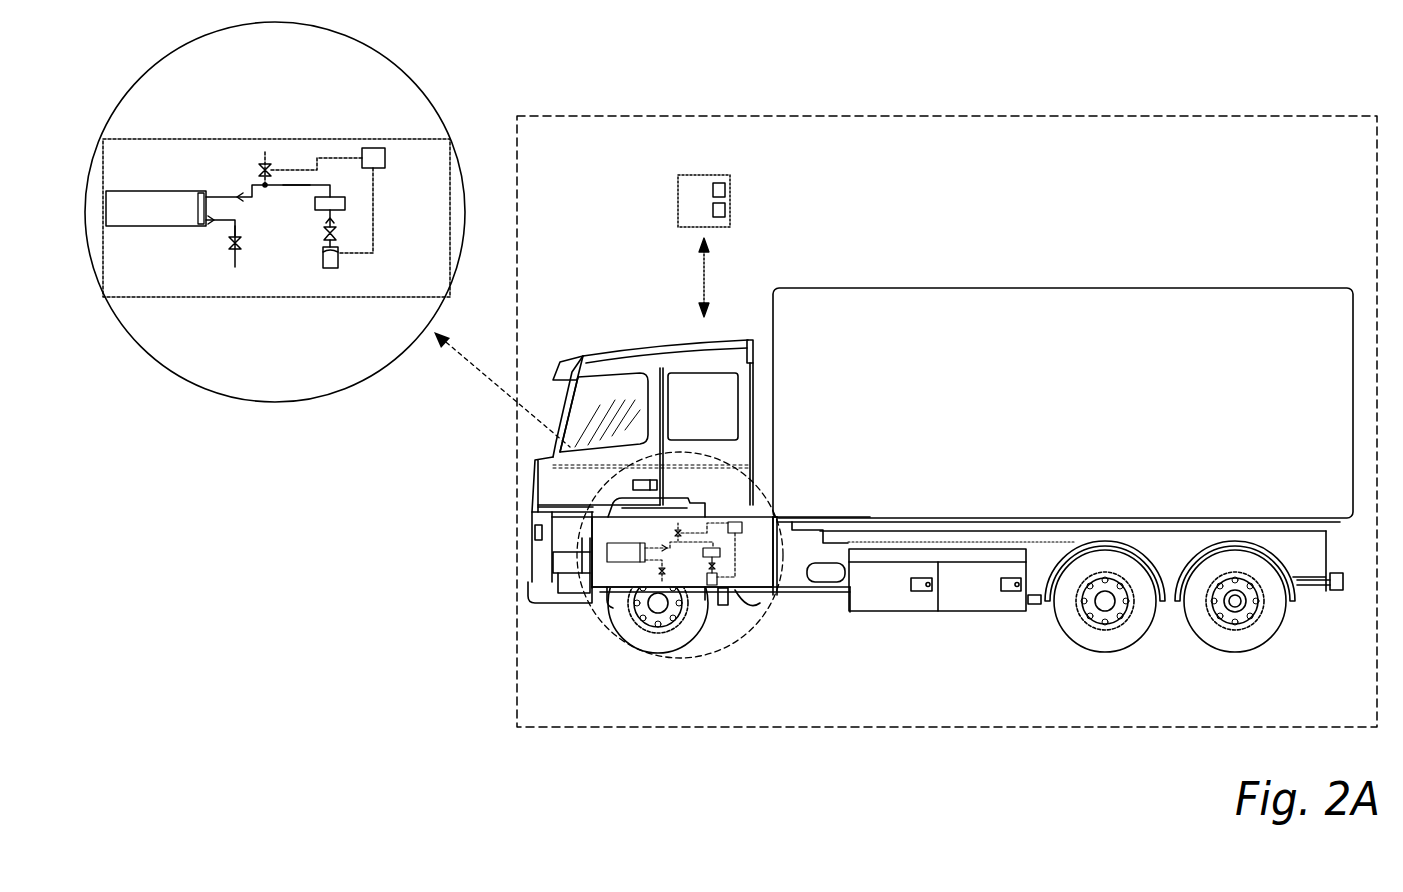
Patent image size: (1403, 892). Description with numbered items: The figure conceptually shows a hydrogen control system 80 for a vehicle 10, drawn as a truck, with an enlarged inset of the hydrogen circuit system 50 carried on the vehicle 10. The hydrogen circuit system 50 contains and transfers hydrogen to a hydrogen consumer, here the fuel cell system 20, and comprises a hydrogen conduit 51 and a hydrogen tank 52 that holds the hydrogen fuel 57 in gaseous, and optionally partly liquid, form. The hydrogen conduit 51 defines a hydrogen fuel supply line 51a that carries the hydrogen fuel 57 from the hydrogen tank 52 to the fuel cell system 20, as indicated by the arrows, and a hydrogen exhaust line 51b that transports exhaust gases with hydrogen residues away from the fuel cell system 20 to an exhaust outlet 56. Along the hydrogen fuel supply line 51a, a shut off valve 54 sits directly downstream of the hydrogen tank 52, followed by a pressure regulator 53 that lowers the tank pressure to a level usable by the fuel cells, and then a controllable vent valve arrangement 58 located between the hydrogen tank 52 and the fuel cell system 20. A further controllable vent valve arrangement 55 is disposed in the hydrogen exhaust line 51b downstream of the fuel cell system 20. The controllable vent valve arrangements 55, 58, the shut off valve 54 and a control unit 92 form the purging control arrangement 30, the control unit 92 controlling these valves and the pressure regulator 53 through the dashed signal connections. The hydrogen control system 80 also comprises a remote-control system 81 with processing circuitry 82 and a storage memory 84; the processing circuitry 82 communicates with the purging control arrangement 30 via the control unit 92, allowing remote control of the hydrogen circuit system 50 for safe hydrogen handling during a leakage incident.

The vehicle 10 is at (595, 247).
The fuel cell system 20 is at (156, 208).
The purging control arrangement 30 is at (276, 169).
The hydrogen circuit system 50 is at (113, 150).
The hydrogen conduit 51 is at (227, 210).
The hydrogen fuel supply line 51a is at (237, 197).
The hydrogen exhaust line 51b is at (240, 253).
The hydrogen tank 52 is at (330, 270).
The pressure regulator 53 is at (345, 203).
The shut off valve 54 is at (337, 237).
The controllable vent valve arrangement 55 is at (229, 242).
The exhaust outlet 56 is at (234, 249).
The hydrogen fuel 57 is at (297, 187).
The controllable vent valve arrangement 58 is at (262, 167).
The hydrogen control system 80 is at (930, 117).
The remote-control system 81 is at (777, 224).
The processing circuitry 82 is at (862, 210).
The storage memory 84 is at (730, 190).
The control unit 92 is at (375, 148).